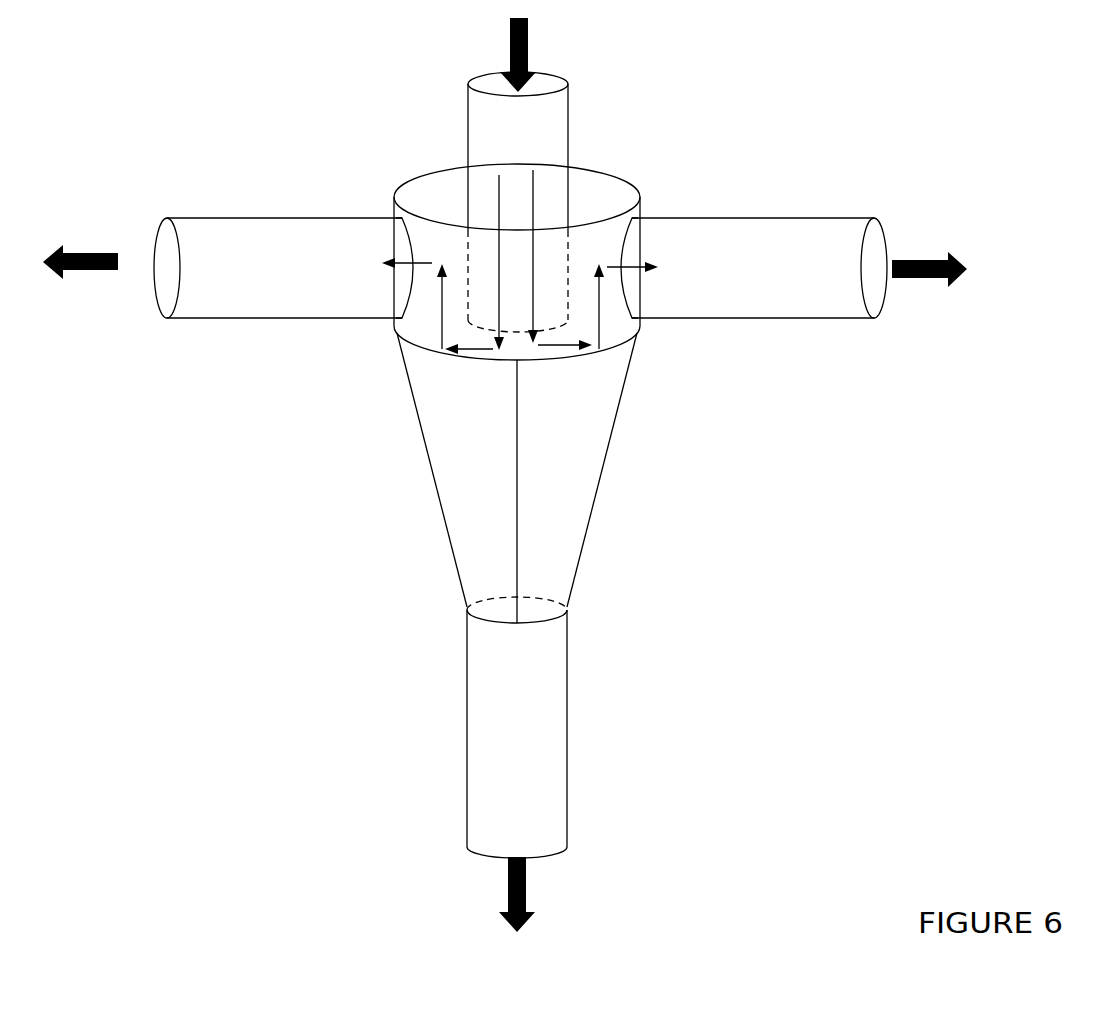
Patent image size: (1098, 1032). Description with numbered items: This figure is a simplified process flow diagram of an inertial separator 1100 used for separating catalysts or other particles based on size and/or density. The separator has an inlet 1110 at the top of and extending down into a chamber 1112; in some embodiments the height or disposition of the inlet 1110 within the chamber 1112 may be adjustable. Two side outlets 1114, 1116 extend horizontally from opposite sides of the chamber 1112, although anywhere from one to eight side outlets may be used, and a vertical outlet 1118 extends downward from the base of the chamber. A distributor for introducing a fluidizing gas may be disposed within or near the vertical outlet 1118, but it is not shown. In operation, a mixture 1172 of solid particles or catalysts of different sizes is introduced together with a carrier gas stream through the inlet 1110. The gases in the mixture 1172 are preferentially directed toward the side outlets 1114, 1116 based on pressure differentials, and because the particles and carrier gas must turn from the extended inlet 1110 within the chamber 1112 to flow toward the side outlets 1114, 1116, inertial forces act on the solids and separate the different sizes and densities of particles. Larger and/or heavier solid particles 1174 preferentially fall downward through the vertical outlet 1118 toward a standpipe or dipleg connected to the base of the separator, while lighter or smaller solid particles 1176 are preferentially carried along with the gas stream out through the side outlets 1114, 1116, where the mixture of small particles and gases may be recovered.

The inertial separator 1100 is at (327, 620).
The inlet 1110 is at (570, 120).
The chamber 1112 is at (613, 173).
The side outlet 1114 is at (248, 322).
The side outlet 1116 is at (788, 323).
The vertical outlet 1118 is at (568, 728).
The mixture 1172 is at (541, 55).
The larger and/or heavier solid particles 1174 is at (494, 894).
The lighter or smaller solid particles 1176 is at (509, 278).